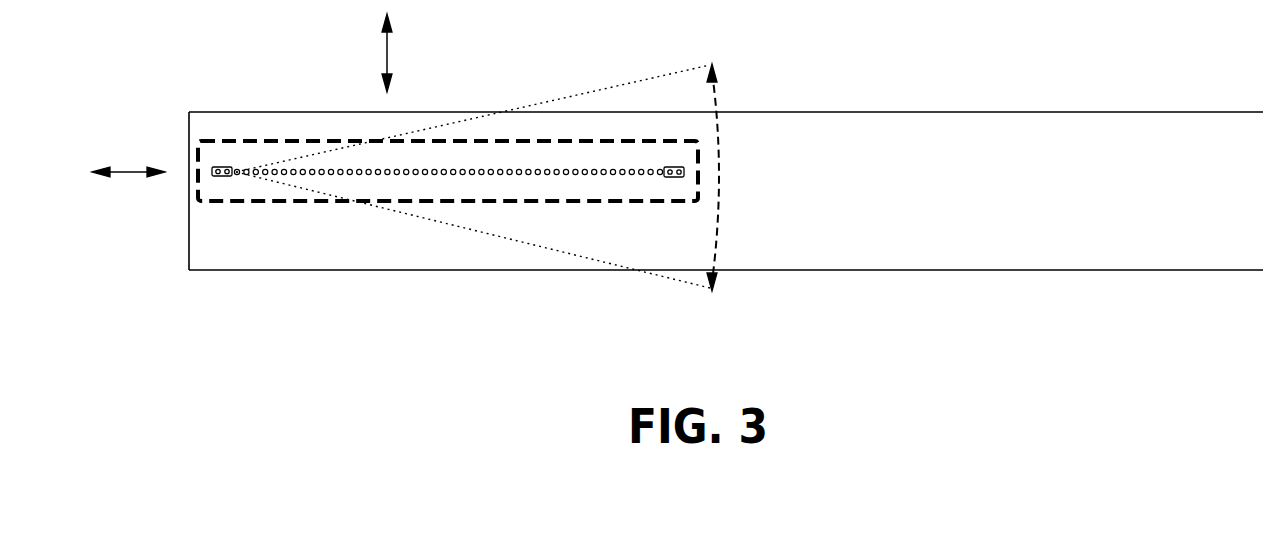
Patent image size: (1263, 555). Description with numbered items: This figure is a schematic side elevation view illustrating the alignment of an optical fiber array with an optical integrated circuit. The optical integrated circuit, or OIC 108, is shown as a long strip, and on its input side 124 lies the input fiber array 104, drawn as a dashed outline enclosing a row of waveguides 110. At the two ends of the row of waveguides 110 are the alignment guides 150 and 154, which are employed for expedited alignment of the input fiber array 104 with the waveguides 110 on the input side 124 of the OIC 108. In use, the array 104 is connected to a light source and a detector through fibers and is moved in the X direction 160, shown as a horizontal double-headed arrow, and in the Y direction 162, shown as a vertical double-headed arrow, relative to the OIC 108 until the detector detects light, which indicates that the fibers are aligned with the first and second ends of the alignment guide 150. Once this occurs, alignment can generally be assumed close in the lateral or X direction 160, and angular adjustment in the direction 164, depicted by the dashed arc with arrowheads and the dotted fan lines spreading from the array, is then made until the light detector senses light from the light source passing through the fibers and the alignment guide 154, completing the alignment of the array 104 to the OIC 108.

The input fiber array 104 is at (278, 142).
The optical integrated circuit 108 is at (935, 112).
The waveguides 110 is at (513, 176).
The input side 124 is at (1053, 197).
The alignment guide 150 is at (222, 177).
The alignment guide 154 is at (677, 178).
The X direction 160 is at (128, 172).
The Y direction 162 is at (383, 52).
The angular adjustment direction 164 is at (718, 92).